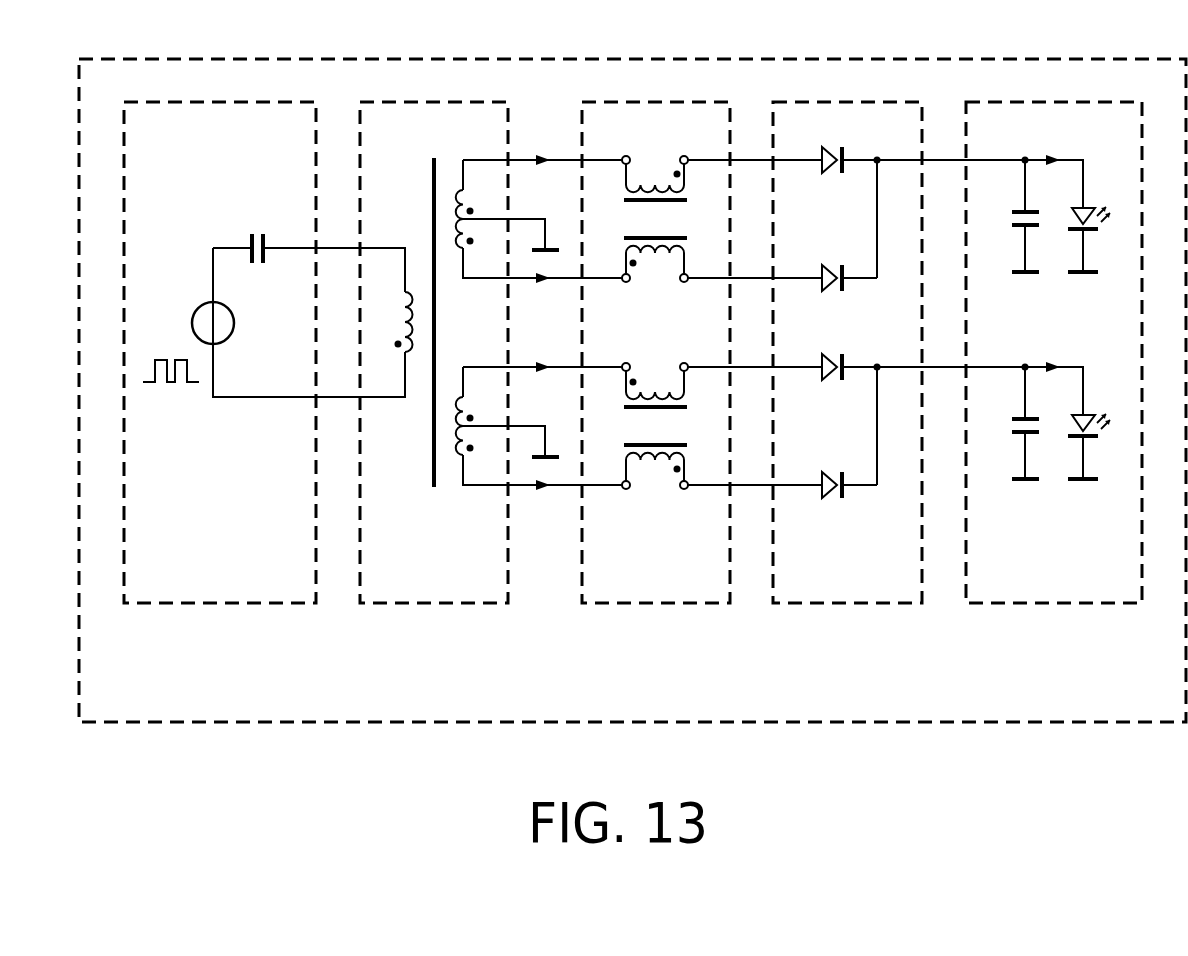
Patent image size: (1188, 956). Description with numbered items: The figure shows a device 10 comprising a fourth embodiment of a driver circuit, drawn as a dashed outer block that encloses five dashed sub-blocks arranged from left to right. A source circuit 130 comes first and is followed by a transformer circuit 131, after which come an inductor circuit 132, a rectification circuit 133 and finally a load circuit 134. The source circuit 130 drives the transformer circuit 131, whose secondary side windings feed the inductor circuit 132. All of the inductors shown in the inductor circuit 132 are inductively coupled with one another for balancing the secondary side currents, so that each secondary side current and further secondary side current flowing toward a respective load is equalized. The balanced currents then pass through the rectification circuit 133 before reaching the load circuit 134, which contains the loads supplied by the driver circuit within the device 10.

The device 10 is at (1075, 722).
The source circuit 130 is at (217, 603).
The transformer circuit 131 is at (440, 603).
The inductor circuit 132 is at (661, 603).
The rectification circuit 133 is at (839, 603).
The load circuit 134 is at (1075, 603).